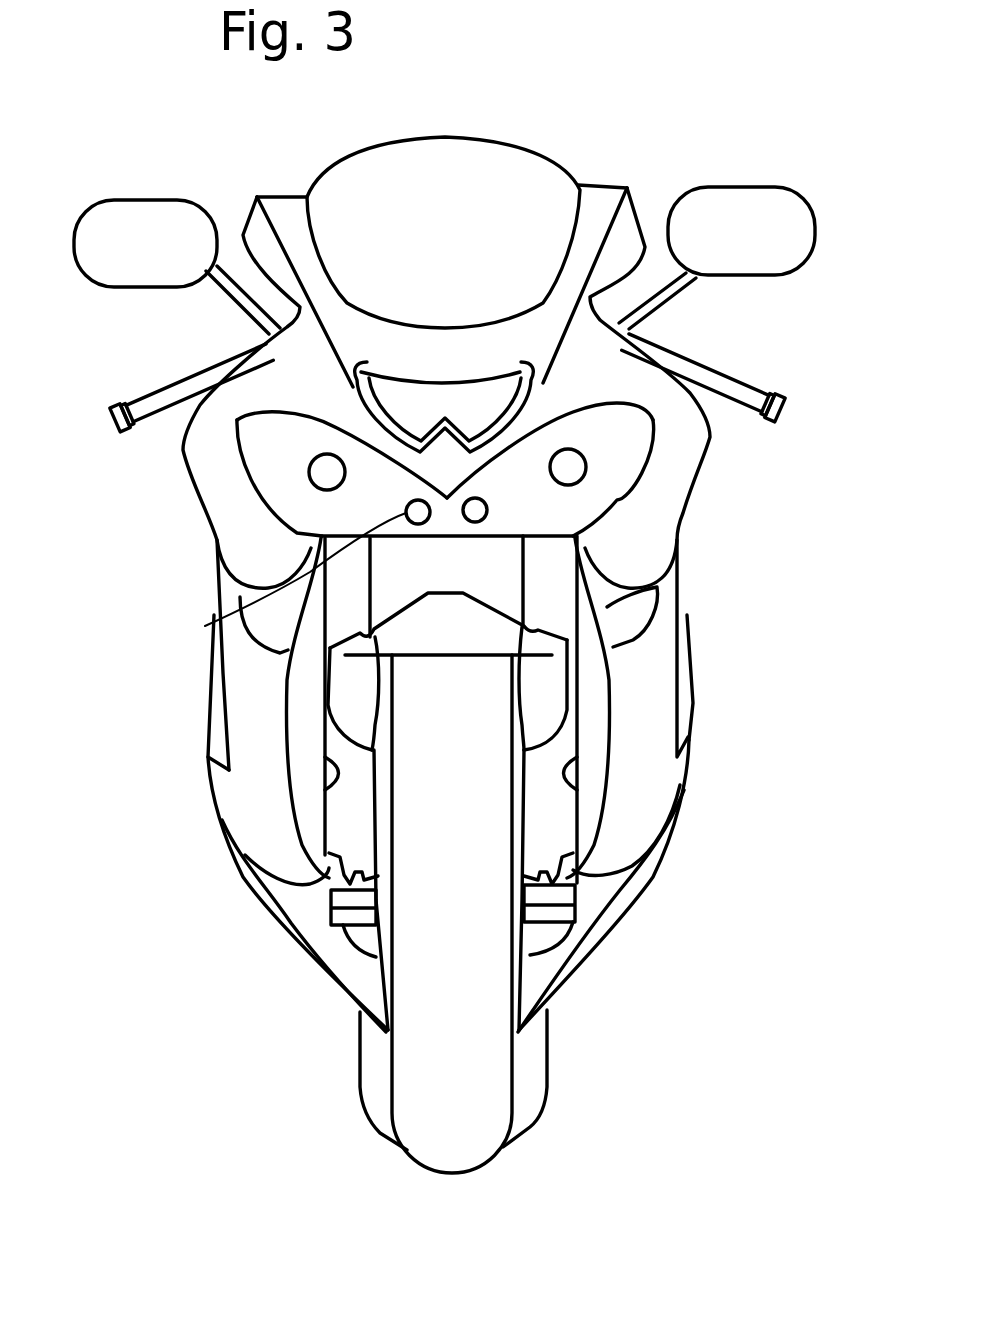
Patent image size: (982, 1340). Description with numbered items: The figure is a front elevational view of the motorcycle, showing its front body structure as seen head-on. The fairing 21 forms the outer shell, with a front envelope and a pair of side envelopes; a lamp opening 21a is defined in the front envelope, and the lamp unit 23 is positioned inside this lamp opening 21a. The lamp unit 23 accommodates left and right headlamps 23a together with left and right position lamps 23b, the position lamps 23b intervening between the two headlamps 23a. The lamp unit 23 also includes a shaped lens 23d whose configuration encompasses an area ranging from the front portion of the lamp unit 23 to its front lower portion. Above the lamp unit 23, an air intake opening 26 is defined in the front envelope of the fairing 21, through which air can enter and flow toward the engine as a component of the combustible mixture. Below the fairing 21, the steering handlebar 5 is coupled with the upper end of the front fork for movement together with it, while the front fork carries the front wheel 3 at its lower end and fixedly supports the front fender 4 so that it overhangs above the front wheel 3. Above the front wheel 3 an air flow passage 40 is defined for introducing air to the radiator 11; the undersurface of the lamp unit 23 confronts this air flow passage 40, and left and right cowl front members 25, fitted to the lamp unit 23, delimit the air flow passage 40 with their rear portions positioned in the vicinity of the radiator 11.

The front wheel 3 is at (487, 1063).
The front fender 4 is at (480, 628).
The steering handlebar 5 is at (723, 383).
The radiator 11 is at (347, 817).
The fairing 21 is at (697, 512).
The lamp opening 21a is at (327, 428).
The lamp unit 23 is at (668, 463).
The headlamp 23a is at (307, 477).
The position lamp 23b is at (466, 518).
The lens 23d is at (327, 510).
The cowl front member 25 is at (349, 783).
The air intake opening 26 is at (512, 407).
The air flow passage 40 is at (500, 580).